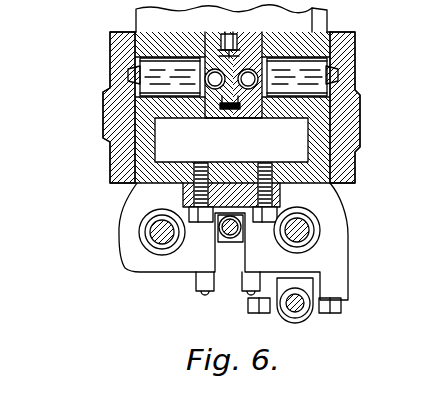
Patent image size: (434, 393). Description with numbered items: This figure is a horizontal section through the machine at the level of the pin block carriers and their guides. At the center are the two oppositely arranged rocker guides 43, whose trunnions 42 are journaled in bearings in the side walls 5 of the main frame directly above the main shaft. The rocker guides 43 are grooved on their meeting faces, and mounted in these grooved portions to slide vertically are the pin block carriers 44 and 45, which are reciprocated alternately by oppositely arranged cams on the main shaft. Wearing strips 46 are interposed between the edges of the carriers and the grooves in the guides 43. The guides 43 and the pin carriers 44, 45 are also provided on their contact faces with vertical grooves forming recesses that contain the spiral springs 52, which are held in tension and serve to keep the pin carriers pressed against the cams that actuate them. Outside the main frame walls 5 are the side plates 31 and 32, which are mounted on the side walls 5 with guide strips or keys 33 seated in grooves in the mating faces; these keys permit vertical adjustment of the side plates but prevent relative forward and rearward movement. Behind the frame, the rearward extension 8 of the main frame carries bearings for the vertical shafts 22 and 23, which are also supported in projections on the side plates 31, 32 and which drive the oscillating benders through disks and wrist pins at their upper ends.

The side plates or walls 5 is at (149, 139).
The rearward extension 8 is at (233, 243).
The vertical shaft 22 is at (303, 226).
The vertical shaft 23 is at (160, 233).
The side plate 31 is at (358, 161).
The side plate 32 is at (109, 166).
The guide strips or keys 33 is at (127, 79).
The trunnions 42 is at (168, 58).
The rocker guides 43 is at (213, 54).
The pin block carrier 44 is at (233, 46).
The pin block carrier 45 is at (225, 52).
The wearing strips 46 is at (222, 122).
The spiral springs 52 is at (205, 116).